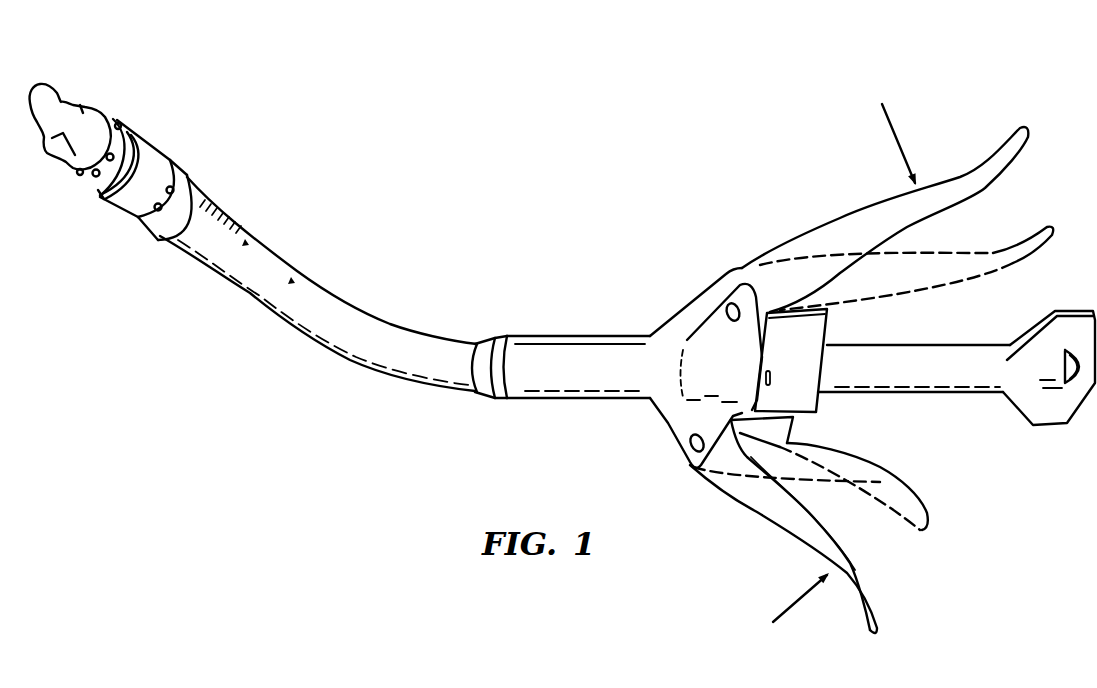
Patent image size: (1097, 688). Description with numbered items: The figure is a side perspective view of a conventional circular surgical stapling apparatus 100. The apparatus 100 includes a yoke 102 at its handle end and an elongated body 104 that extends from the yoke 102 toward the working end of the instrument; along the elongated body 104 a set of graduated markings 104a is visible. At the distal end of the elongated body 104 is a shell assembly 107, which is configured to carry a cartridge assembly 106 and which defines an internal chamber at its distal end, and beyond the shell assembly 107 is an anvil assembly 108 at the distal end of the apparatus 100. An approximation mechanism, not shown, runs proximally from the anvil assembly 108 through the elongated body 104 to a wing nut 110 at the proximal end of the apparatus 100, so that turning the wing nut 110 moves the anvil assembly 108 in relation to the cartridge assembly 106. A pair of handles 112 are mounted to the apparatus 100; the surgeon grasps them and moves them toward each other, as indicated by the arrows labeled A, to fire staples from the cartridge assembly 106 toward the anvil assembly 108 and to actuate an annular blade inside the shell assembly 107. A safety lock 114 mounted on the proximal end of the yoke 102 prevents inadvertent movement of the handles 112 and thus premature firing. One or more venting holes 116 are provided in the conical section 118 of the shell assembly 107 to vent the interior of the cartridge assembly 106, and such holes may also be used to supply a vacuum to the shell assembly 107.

The surgical stapling apparatus 100 is at (400, 82).
The yoke 102 is at (580, 340).
The elongated body 104 is at (382, 327).
The graduated markings 104a is at (300, 273).
The cartridge assembly 106 is at (97, 197).
The shell assembly 107 is at (140, 137).
The anvil assembly 108 is at (83, 113).
The wing nut 110 is at (1077, 320).
The handles 112 is at (803, 240).
The safety lock 114 is at (810, 383).
The venting holes 116 is at (173, 210).
The conical section 118 is at (187, 180).